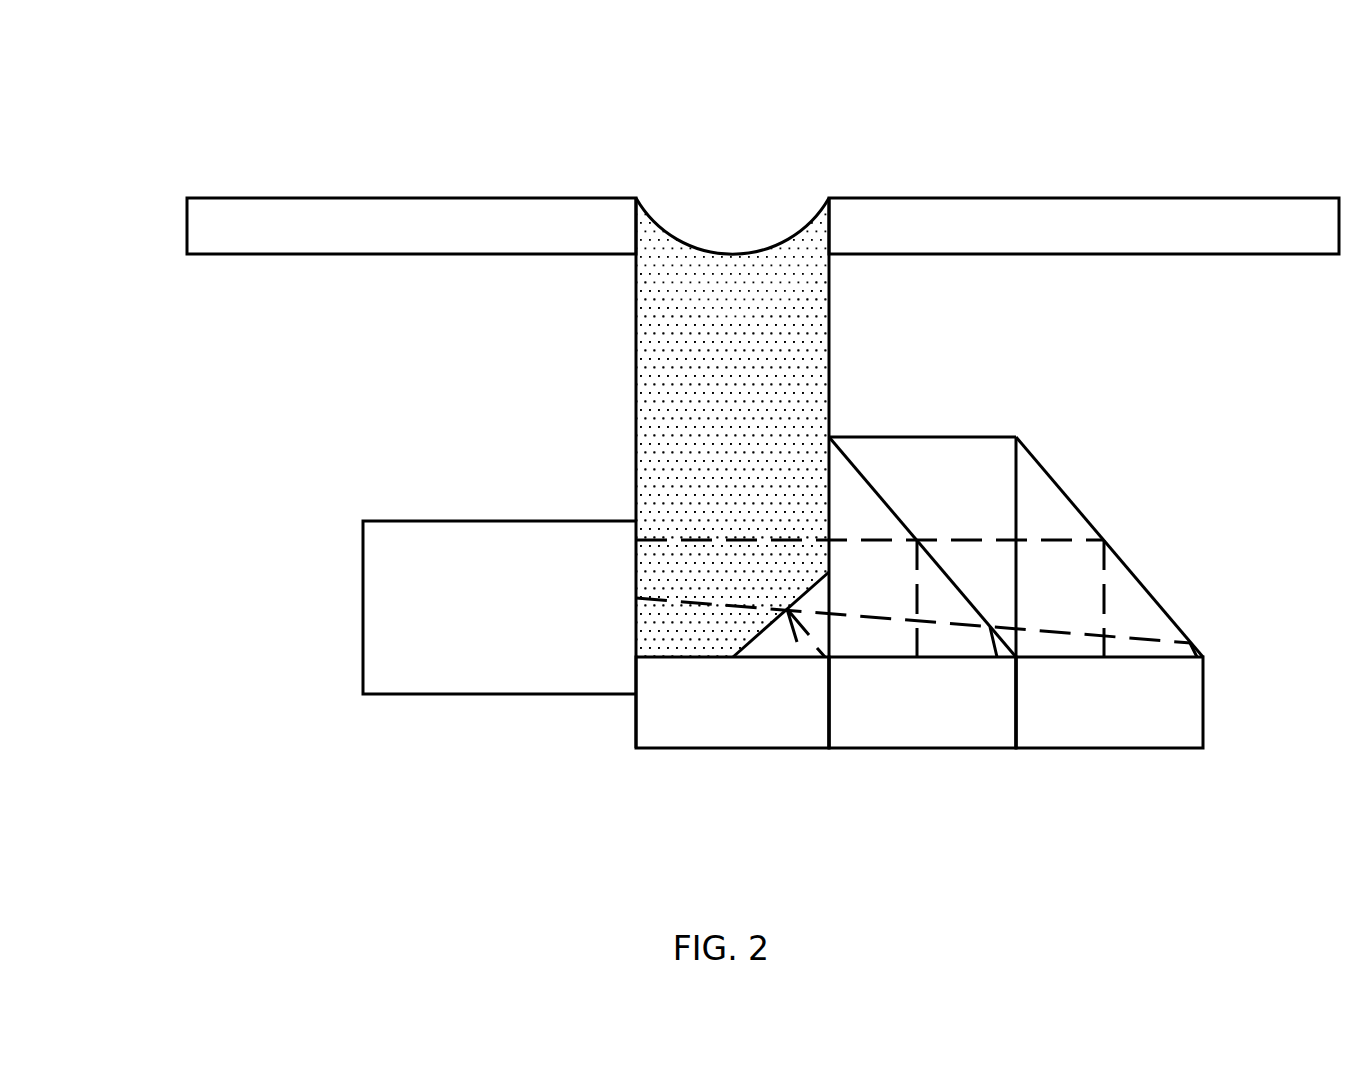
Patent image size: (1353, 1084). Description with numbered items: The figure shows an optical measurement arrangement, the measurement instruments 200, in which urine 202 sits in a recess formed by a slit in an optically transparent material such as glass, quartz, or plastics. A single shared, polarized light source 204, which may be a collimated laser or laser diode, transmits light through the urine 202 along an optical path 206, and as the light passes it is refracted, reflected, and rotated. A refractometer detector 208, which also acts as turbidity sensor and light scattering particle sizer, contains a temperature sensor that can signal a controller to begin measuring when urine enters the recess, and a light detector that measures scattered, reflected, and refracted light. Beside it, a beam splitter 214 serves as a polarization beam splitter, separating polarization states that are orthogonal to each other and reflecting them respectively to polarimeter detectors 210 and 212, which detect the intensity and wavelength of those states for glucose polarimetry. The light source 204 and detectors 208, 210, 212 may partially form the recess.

The measurement instruments 200 is at (222, 97).
The urine 202 is at (676, 243).
The light source 204 is at (475, 627).
The optical path 206 is at (744, 540).
The refractometer detector 208 is at (712, 717).
The polarimeter detector 210 is at (905, 717).
The polarimeter detector 212 is at (1083, 717).
The beam splitter 214 is at (1078, 510).